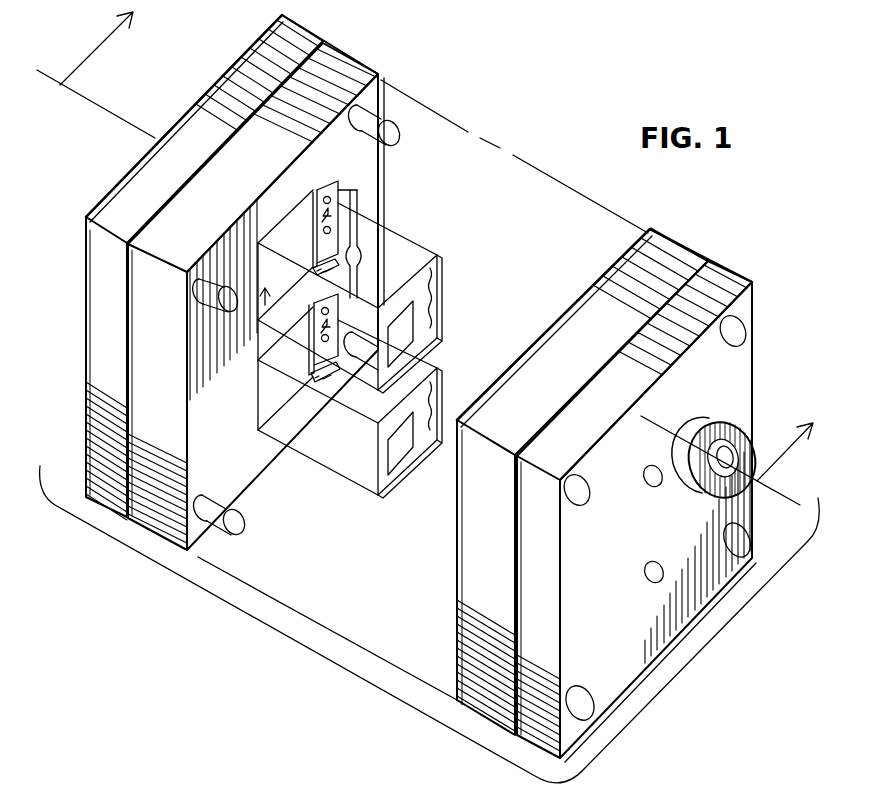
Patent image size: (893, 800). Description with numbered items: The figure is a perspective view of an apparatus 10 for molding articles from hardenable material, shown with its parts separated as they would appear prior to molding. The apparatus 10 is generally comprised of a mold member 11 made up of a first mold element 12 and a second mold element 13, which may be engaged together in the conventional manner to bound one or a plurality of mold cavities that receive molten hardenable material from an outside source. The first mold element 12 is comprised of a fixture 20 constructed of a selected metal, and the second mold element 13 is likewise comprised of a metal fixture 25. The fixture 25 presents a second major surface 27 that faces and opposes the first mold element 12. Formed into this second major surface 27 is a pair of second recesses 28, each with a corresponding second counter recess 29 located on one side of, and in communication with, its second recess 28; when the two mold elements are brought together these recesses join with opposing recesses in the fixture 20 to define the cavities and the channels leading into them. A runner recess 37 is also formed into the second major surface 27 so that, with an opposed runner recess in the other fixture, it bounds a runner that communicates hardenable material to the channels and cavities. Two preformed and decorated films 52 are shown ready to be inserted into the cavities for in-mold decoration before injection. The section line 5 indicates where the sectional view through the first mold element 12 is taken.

The section line 5— 5 is at (425, 258).
The apparatus 10 is at (587, 78).
The mold member 11 is at (609, 484).
The first mold element 12 is at (757, 358).
The second mold element 13 is at (238, 62).
The fixture 20 is at (473, 577).
The fixture 25 is at (349, 58).
The second major surface 27 is at (232, 482).
The second recess 28 is at (276, 383).
The second counter recess 29 is at (334, 188).
The runner recess 37 is at (357, 232).
The film 52 is at (441, 316).